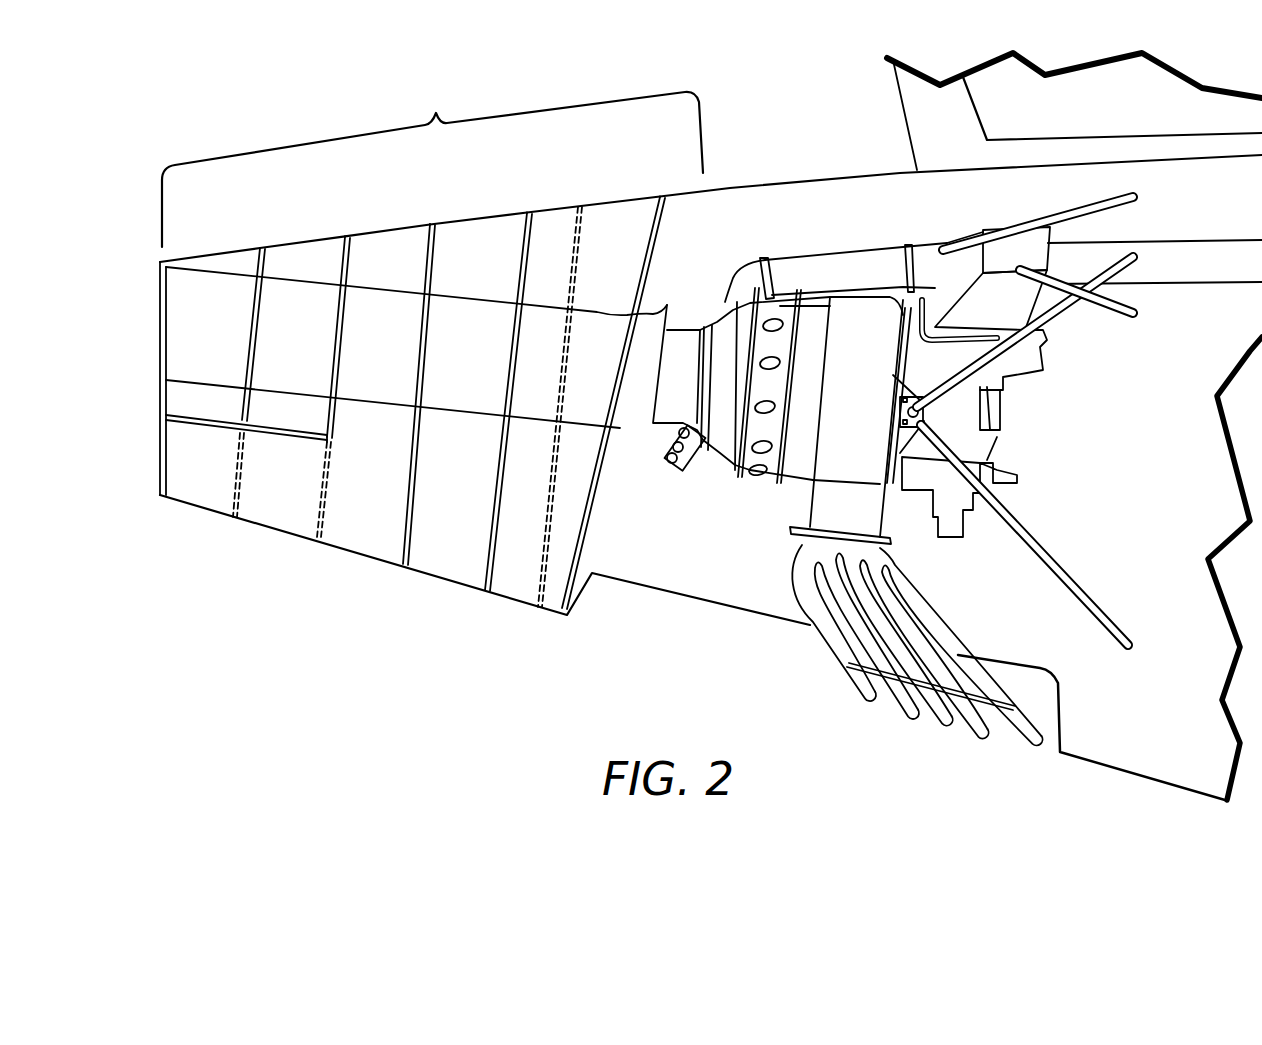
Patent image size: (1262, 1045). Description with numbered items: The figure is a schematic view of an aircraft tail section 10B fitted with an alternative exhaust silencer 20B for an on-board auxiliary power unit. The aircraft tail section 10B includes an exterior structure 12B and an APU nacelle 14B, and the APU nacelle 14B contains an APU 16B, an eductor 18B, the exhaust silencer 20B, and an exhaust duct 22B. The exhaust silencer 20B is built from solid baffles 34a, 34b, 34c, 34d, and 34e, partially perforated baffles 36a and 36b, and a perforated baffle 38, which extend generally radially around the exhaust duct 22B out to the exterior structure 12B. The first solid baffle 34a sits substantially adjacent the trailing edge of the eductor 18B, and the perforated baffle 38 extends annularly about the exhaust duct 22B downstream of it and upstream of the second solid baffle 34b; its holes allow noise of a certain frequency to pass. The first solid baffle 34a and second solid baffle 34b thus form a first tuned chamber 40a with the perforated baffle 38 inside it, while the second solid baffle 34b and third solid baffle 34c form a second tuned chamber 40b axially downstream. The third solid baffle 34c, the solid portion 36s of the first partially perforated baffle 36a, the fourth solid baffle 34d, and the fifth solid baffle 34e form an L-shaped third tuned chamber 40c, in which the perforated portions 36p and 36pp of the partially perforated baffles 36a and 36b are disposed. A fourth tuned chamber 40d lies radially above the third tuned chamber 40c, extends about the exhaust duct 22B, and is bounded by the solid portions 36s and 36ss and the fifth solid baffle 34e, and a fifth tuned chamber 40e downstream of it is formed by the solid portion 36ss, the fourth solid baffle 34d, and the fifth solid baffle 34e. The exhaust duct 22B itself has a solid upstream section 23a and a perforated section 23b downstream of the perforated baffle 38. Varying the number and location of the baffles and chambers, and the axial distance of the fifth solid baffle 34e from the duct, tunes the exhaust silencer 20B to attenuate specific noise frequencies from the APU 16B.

The aircraft tail section 10B is at (878, 118).
The exterior structure 12B is at (887, 173).
The APU nacelle 14B is at (750, 577).
The APU 16B is at (697, 490).
The eductor 18B is at (620, 428).
The exhaust silencer 20B is at (432, 169).
The exhaust duct 22B is at (598, 310).
The solid section of exhaust duct 23a is at (577, 410).
The perforated section of exhaust duct 23b is at (455, 403).
The first solid baffle 34a is at (657, 220).
The second solid baffle 34b is at (492, 553).
The third solid baffle 34c is at (403, 540).
The fourth solid baffle 34d is at (158, 467).
The fifth solid baffle 34e is at (212, 420).
The first partially perforated baffle 36a is at (357, 238).
The second partially perforated baffle 36b is at (268, 250).
The solid portion of first partially perforated baffle 36s is at (343, 267).
The solid portion of second partially perforated baffle 36ss is at (263, 270).
The perforated portion of first partially perforated baffle 36p is at (320, 520).
The perforated portion of second partially perforated baffle 36pp is at (240, 490).
The perforated baffle 38 is at (535, 593).
The first tuned chamber 40a is at (556, 208).
The second tuned chamber 40b is at (481, 214).
The third tuned chamber 40c is at (417, 227).
The fourth tuned chamber 40d is at (328, 240).
The fifth tuned chamber 40e is at (207, 257).